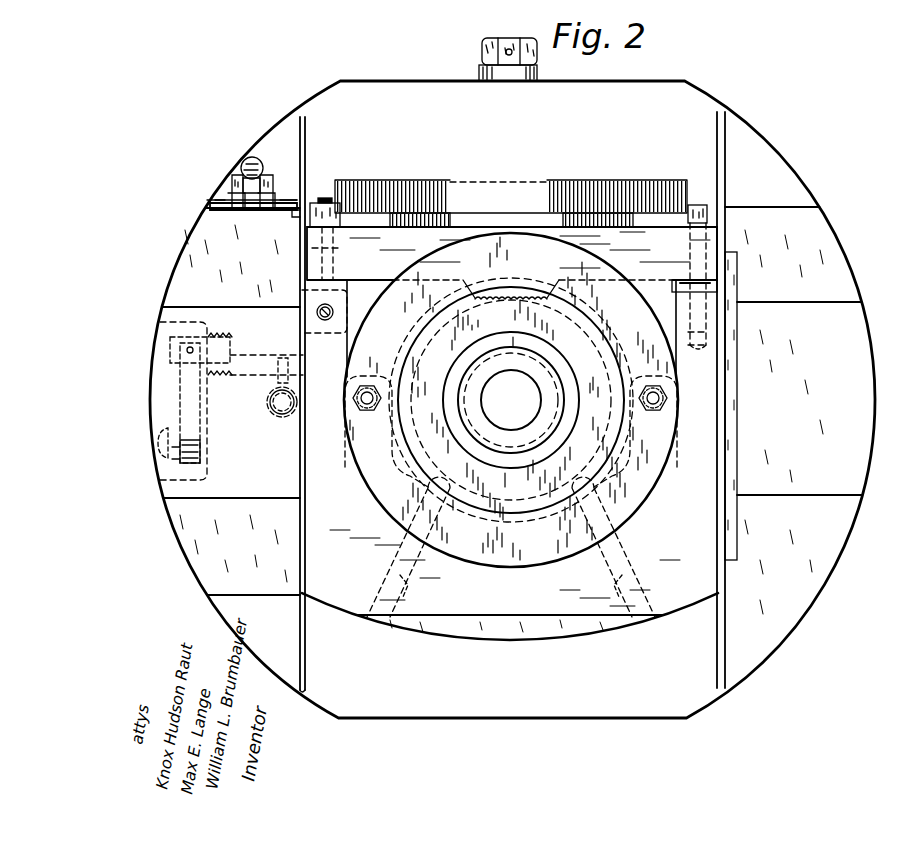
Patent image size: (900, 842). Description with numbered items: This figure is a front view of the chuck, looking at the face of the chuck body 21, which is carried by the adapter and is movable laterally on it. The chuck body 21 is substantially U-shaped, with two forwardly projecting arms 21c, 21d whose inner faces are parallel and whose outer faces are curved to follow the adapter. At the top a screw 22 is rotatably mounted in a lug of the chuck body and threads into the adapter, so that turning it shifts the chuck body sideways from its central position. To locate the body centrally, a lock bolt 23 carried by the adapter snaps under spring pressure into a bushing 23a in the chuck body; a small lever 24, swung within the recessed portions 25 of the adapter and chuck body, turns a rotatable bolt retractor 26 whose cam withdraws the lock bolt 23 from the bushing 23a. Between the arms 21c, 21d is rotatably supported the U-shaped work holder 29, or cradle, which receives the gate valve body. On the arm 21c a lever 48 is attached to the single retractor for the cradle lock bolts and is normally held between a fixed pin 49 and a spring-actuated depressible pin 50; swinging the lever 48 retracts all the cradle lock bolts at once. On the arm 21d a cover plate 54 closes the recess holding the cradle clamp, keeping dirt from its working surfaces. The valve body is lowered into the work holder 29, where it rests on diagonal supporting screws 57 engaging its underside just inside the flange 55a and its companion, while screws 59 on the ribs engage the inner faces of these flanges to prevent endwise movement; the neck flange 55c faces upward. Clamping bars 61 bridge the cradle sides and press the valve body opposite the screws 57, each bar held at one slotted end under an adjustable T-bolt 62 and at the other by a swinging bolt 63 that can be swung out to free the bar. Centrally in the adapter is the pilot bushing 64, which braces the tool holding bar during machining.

The chuck body 21 is at (590, 705).
The arm of the chuck body 21c is at (192, 254).
The arm of the chuck body 21d is at (832, 252).
The screw 22 is at (480, 46).
The lock bolt 23 is at (280, 415).
The bushing 23a is at (284, 418).
The lever 24 is at (190, 420).
The recessed portions 25 is at (142, 320).
The bolt retractor 26 is at (250, 340).
The work holder 29 is at (503, 632).
The lever 48 is at (245, 160).
The fixed pin 49 is at (266, 180).
The depressible pin 50 is at (236, 192).
The cover plate 54 is at (735, 420).
The flange 55a is at (516, 248).
The flange 55c is at (480, 190).
The supporting screws 57 is at (418, 600).
The screws 59 is at (360, 410).
The clamping bars 61 is at (388, 238).
The T-bolt 62 is at (698, 205).
The swinging bolt 63 is at (325, 200).
The pilot bushing 64 is at (485, 425).